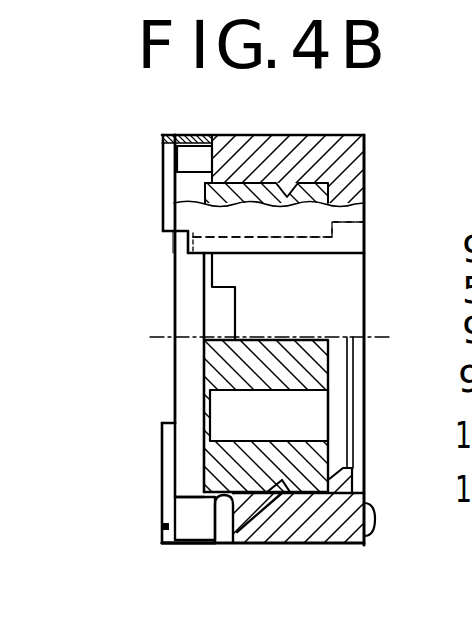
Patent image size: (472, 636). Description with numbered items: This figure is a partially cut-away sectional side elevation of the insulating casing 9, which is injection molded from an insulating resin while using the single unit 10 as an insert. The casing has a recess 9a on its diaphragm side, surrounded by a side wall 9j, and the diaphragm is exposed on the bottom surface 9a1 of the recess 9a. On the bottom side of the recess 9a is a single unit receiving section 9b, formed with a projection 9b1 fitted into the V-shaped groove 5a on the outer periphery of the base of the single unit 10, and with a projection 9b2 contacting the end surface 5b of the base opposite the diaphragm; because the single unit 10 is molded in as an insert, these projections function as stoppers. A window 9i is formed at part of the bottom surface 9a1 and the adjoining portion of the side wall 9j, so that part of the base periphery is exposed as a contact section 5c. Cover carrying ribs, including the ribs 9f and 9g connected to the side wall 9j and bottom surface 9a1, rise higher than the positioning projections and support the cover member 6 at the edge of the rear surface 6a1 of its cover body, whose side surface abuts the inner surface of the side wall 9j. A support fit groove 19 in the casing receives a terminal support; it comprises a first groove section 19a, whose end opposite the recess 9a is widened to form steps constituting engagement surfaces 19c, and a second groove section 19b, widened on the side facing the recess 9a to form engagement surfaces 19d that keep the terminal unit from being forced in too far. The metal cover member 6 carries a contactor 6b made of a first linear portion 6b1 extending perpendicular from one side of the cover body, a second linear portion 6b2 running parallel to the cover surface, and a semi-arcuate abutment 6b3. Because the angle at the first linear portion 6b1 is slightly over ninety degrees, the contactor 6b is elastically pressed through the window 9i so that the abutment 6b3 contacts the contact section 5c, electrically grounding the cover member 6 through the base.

The insulating casing 9 is at (295, 130).
The cover carrying rib 9g is at (195, 130).
The bottom surface of the recess 9a1 is at (173, 180).
The side wall 9j is at (165, 195).
The engagement surface 19d is at (175, 244).
The support fit groove 19 is at (297, 250).
The first groove section 19a is at (340, 238).
The second groove section 19b is at (305, 251).
The engagement surface 19c is at (345, 233).
The cover member 6 is at (172, 337).
The rear surface of the cover body 6a1 is at (188, 306).
The contactor 6b is at (218, 548).
The abutment 6b3 is at (269, 415).
The single unit 10 is at (333, 375).
The V-shaped groove 5a is at (330, 450).
The projection 9b2 is at (340, 477).
The second linear portion 6b2 is at (257, 530).
The single unit receiving section 9b is at (243, 530).
The projection 9b1 is at (273, 530).
The end surface of the base 5b is at (366, 502).
The recess 9a is at (174, 487).
The contact section 5c is at (175, 500).
The cover carrying rib 9f is at (162, 516).
The window 9i is at (163, 547).
The first linear portion 6b1 is at (183, 547).